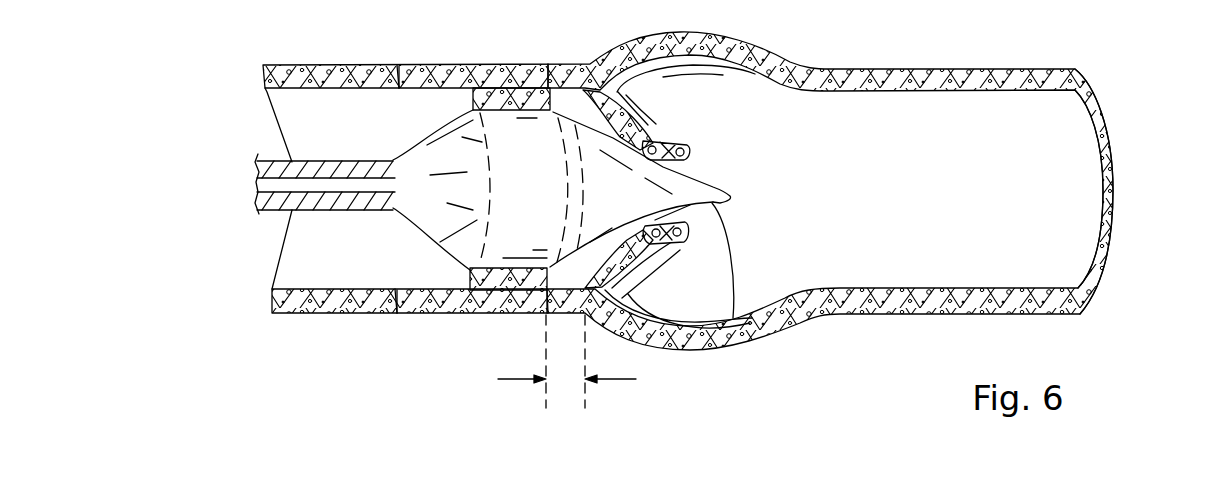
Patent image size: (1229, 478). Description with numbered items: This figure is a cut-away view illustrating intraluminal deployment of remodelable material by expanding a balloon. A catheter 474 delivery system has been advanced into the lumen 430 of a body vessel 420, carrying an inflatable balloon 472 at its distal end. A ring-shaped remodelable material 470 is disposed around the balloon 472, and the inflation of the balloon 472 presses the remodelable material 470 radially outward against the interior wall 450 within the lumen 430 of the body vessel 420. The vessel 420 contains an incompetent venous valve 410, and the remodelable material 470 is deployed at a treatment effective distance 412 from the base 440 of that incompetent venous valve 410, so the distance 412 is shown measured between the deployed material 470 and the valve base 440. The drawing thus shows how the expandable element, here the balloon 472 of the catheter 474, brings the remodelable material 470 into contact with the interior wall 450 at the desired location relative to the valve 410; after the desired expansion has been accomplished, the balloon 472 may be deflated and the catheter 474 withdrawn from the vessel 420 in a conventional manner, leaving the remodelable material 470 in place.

The incompetent venous valve 410 is at (358, 340).
The treatment effective distance 412 is at (618, 382).
The body vessel 420 is at (319, 63).
The lumen 430 is at (1077, 238).
The base of the incompetent venous valve 440 is at (587, 65).
The interior wall 450 is at (432, 65).
The ring-shaped remodelable material 470 is at (487, 67).
The inflatable balloon 472 is at (730, 200).
The catheter 474 is at (275, 167).